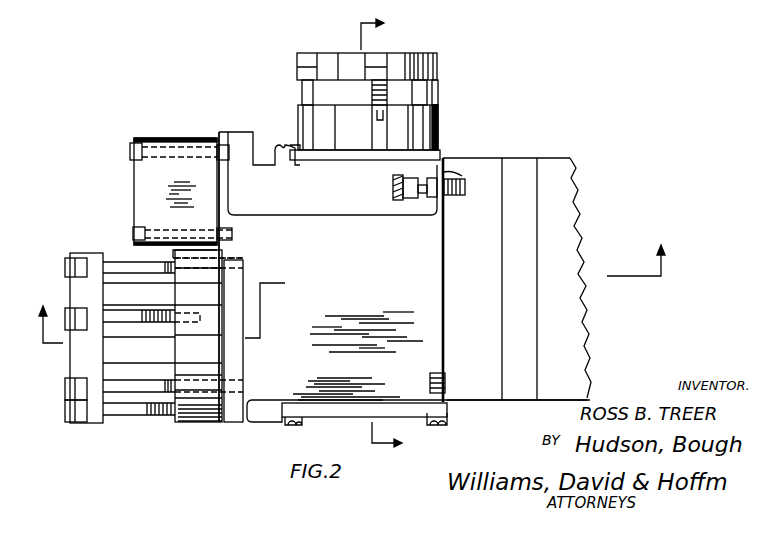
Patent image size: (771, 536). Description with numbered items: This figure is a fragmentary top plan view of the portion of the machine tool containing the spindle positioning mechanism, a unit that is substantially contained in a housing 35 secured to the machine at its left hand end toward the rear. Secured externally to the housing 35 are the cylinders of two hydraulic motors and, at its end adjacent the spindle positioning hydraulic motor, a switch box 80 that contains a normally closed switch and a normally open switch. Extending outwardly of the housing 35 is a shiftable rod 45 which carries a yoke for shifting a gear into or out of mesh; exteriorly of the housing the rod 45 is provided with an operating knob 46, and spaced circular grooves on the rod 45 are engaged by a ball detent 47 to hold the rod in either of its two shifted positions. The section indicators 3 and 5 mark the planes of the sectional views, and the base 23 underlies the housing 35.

The section line 3- 3 is at (350, 283).
The section line 5- 5 is at (391, 233).
The base 23 is at (552, 163).
The housing 35 is at (396, 297).
The shiftable rod 45 is at (482, 212).
The operating knob 46 is at (393, 182).
The ball detent 47 is at (449, 172).
The switch box 80 is at (142, 195).